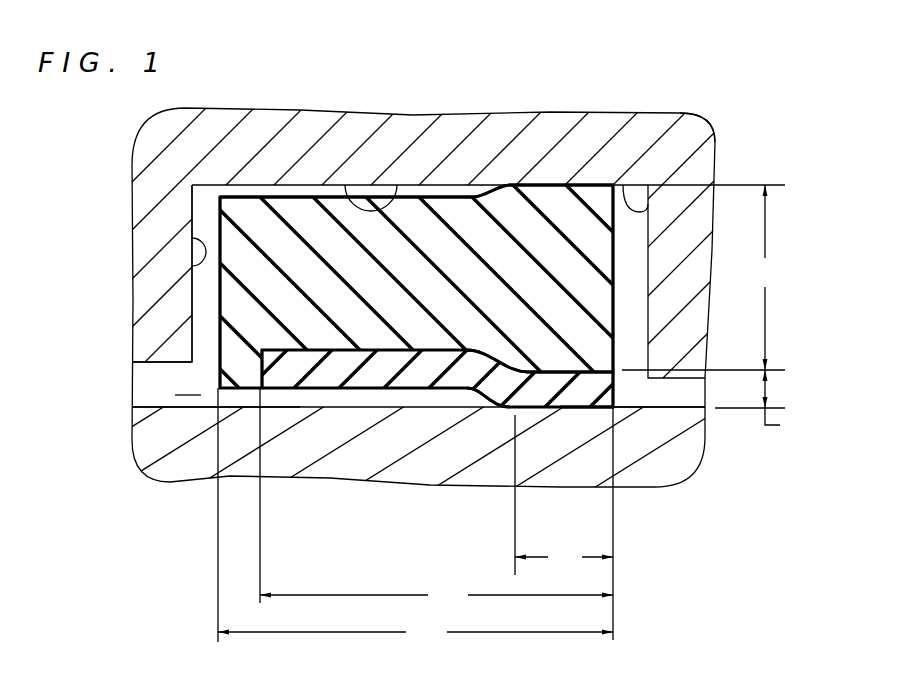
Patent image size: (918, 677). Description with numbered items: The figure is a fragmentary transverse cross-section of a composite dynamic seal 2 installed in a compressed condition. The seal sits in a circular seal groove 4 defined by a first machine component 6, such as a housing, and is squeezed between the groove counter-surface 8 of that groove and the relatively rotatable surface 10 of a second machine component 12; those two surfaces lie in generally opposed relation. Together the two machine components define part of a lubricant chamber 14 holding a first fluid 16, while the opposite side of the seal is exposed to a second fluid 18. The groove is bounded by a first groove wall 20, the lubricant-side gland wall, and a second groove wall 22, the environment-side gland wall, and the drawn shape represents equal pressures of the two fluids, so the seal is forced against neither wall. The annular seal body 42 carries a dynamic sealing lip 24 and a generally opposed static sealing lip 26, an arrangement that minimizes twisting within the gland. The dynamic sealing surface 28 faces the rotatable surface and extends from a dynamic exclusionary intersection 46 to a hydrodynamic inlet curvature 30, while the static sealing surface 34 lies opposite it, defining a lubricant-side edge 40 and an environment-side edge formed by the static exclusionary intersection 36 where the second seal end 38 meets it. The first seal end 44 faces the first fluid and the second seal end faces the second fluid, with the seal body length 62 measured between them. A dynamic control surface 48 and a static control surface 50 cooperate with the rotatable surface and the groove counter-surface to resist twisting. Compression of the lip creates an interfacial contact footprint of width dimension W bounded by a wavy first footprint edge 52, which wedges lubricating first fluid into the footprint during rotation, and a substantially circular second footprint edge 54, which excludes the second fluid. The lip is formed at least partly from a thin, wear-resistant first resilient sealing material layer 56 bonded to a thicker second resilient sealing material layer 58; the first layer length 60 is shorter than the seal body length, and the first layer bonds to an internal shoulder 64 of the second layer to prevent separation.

The composite dynamic seal 2 is at (205, 221).
The circular seal groove 4 is at (203, 283).
The first machine component 6 is at (231, 153).
The groove counter-surface 8 is at (400, 184).
The relatively rotatable surface 10 is at (155, 408).
The second machine component 12 is at (170, 437).
The lubricant chamber 14 is at (158, 380).
The first fluid 16 is at (188, 384).
The second fluid 18 is at (672, 395).
The first groove wall 20 is at (197, 266).
The second groove wall 22 is at (710, 132).
The dynamic sealing lip 24 is at (548, 400).
The static sealing lip 26 is at (612, 188).
The dynamic sealing surface 28 is at (598, 400).
The hydrodynamic inlet curvature 30 is at (472, 395).
The static sealing surface 34 is at (563, 198).
The static exclusionary intersection 36 is at (648, 190).
The second seal end 38 is at (613, 297).
The lubricant-side edge 40 is at (523, 186).
The annular seal body 42 is at (412, 272).
The first seal end 44 is at (226, 303).
The dynamic exclusionary intersection 46 is at (613, 420).
The dynamic control surface 48 is at (343, 389).
The static control surface 50 is at (305, 192).
The first footprint edge 52 is at (512, 400).
The second footprint edge 54 is at (613, 458).
The first resilient sealing material layer 56 is at (785, 406).
The second resilient sealing material layer 58 is at (703, 277).
The first layer length 60 is at (436, 514).
The seal body length 62 is at (415, 516).
The internal shoulder 64 is at (262, 368).
The width dimension W is at (564, 495).